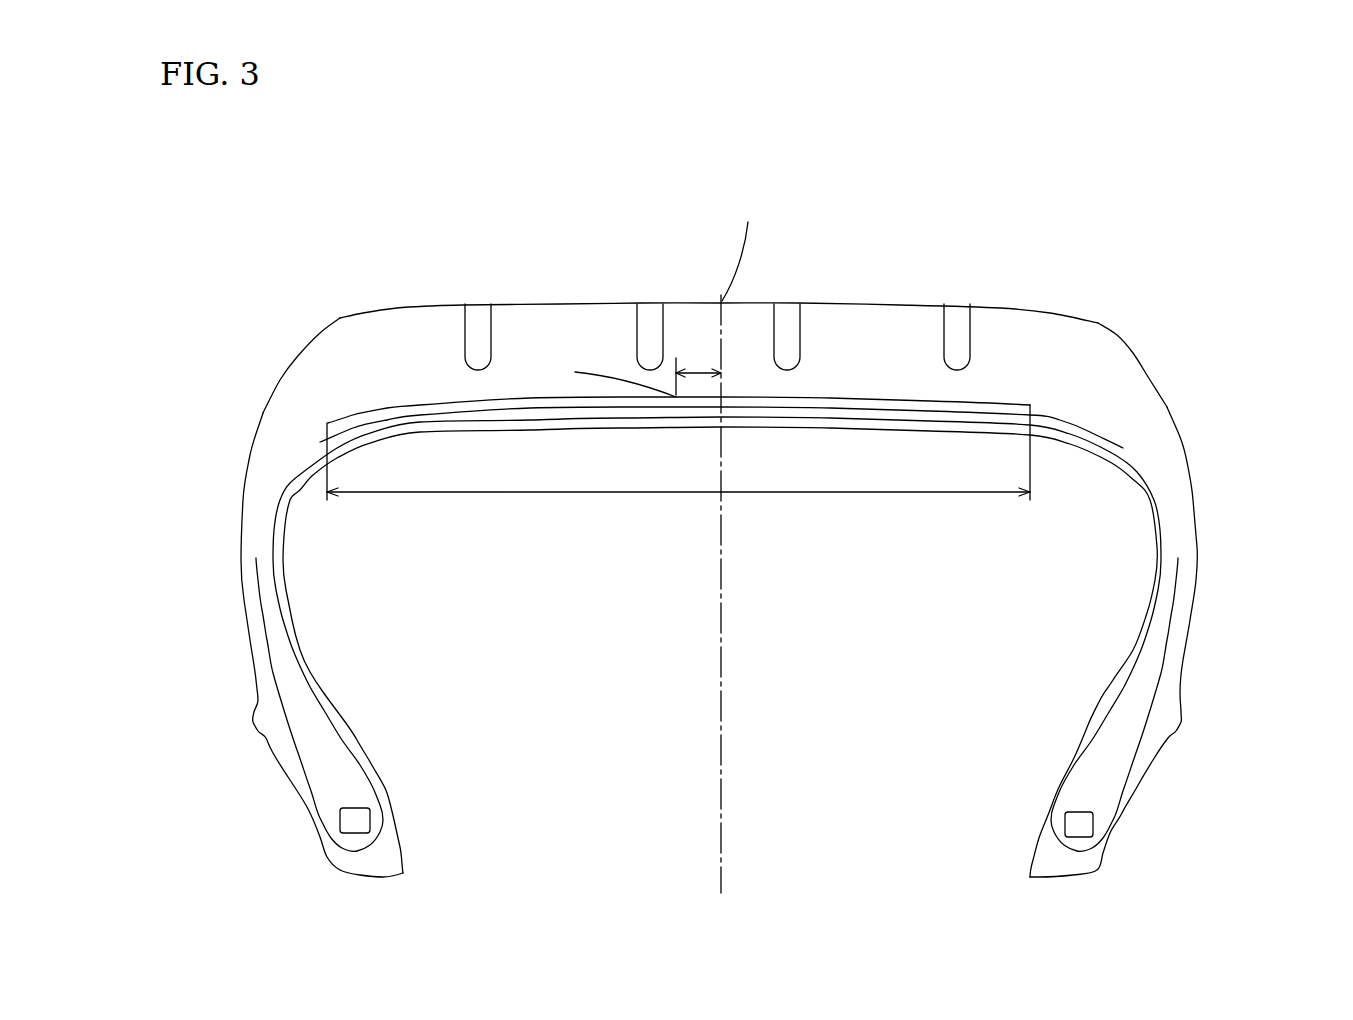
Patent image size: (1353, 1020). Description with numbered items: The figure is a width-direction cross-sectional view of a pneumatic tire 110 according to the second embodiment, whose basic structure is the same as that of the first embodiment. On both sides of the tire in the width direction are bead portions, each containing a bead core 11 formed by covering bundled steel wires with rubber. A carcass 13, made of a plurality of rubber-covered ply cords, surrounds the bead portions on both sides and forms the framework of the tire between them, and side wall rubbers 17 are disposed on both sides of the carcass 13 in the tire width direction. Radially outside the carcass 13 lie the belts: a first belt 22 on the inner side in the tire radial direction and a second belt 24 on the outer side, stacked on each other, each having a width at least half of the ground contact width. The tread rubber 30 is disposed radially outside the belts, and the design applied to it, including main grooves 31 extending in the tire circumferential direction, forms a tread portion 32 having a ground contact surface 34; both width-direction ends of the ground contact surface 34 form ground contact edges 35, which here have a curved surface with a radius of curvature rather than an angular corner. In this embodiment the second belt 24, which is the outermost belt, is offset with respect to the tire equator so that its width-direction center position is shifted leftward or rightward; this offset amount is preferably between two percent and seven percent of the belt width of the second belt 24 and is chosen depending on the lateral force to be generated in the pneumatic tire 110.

The pneumatic tire 110 is at (719, 95).
The bead core 11 is at (360, 823).
The carcass 13 is at (277, 583).
The side wall rubber 17 is at (258, 633).
The first belt 22 is at (823, 396).
The second belt 24 is at (888, 396).
The tread rubber 30 is at (872, 332).
The main groove 31 is at (470, 347).
The tread portion 32 is at (572, 343).
The ground contact surface 34 is at (1023, 308).
The ground contact edge 35 is at (340, 318).